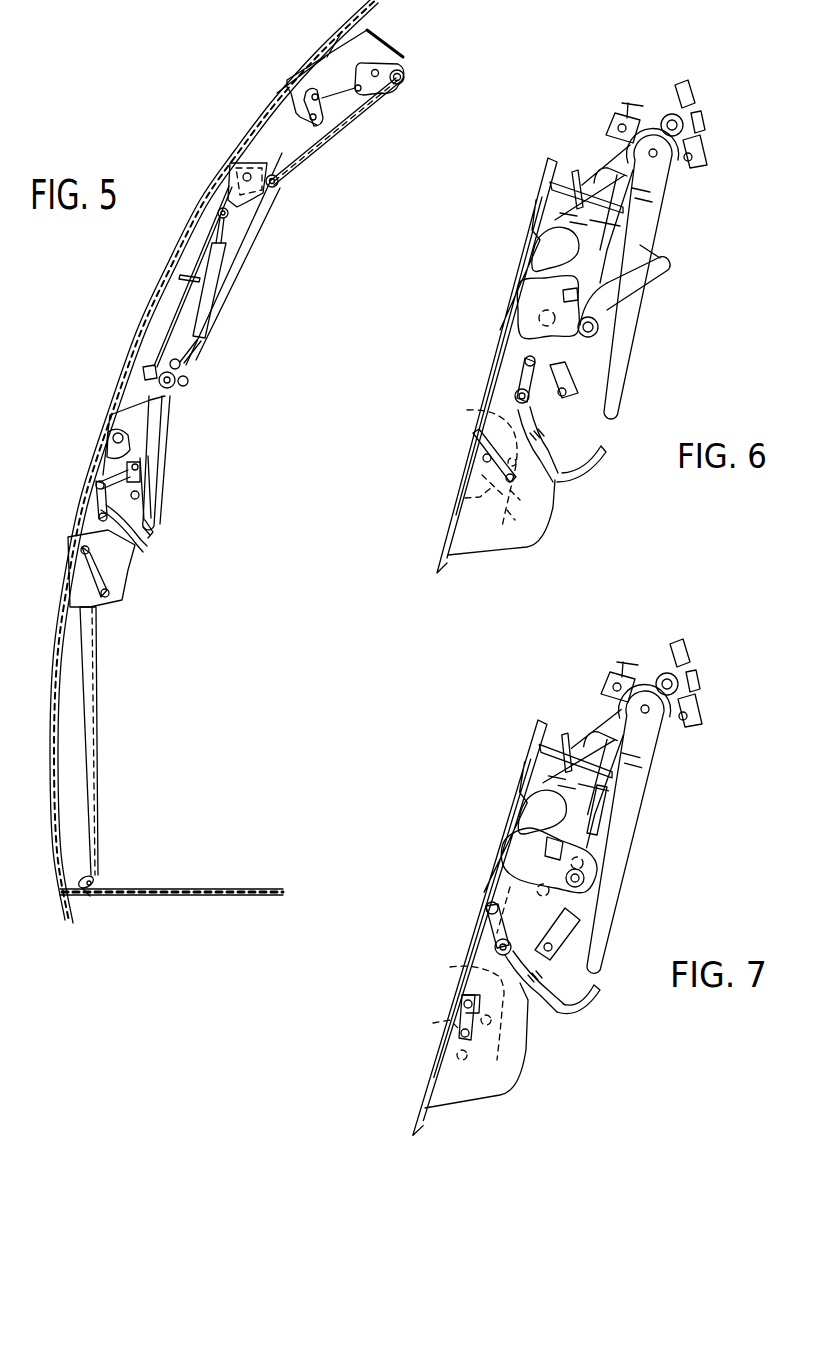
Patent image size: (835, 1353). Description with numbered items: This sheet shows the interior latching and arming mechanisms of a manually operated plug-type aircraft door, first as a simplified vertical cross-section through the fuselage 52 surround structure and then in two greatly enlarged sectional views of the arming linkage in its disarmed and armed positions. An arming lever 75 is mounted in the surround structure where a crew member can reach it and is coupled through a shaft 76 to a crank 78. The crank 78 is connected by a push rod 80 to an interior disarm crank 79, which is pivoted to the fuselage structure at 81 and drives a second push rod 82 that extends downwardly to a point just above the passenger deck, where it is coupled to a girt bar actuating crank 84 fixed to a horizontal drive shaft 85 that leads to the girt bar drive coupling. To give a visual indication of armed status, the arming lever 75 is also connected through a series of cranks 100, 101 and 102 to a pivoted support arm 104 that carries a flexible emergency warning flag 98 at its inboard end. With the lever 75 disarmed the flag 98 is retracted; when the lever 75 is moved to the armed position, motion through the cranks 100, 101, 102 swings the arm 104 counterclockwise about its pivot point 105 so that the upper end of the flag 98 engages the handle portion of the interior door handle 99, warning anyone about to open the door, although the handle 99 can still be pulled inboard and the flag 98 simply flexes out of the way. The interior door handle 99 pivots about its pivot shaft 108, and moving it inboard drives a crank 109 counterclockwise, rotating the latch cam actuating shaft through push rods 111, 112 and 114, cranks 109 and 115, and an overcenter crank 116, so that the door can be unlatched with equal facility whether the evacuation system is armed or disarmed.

In FIG. 5, the fuselage 52 is at (222, 193).
In FIG. 5, the arming lever 75 is at (147, 462).
In FIG. 6, the arming lever 75 is at (637, 290).
In FIG. 7, the arming lever 75 is at (595, 815).
In FIG. 6, the shaft 76 is at (607, 330).
In FIG. 7, the shaft 76 is at (595, 877).
In FIG. 6, the crank 78 is at (620, 267).
In FIG. 7, the crank 78 is at (600, 858).
In FIG. 6, the interior disarm crank 79 is at (465, 500).
In FIG. 7, the interior disarm crank 79 is at (433, 1023).
In FIG. 6, the push rod 80 is at (467, 410).
In FIG. 7, the push rod 80 is at (450, 968).
In FIG. 6, the pivot 81 is at (480, 457).
In FIG. 7, the pivot 81 is at (468, 1005).
In FIG. 5, the second push rod 82 is at (88, 747).
In FIG. 6, the second push rod 82 is at (502, 527).
In FIG. 7, the second push rod 82 is at (443, 1068).
In FIG. 5, the girt bar actuating crank 84 is at (95, 870).
In FIG. 5, the drive shaft 85 is at (85, 893).
In FIG. 5, the flexible emergency warning flag 98 is at (150, 537).
In FIG. 6, the flexible emergency warning flag 98 is at (590, 483).
In FIG. 7, the flexible emergency warning flag 98 is at (597, 993).
In FIG. 5, the interior door handle 99 is at (158, 443).
In FIG. 6, the interior door handle 99 is at (618, 357).
In FIG. 7, the interior door handle 99 is at (605, 905).
In FIG. 5, the crank 100 is at (105, 442).
In FIG. 6, the crank 100 is at (585, 363).
In FIG. 7, the crank 100 is at (567, 915).
In FIG. 5, the crank 101 is at (127, 470).
In FIG. 6, the crank 101 is at (515, 343).
In FIG. 7, the crank 101 is at (517, 885).
In FIG. 5, the crank 102 is at (97, 497).
In FIG. 6, the crank 102 is at (520, 373).
In FIG. 7, the crank 102 is at (488, 927).
In FIG. 5, the pivoted support arm 104 is at (118, 570).
In FIG. 6, the pivoted support arm 104 is at (553, 460).
In FIG. 7, the pivoted support arm 104 is at (560, 1013).
In FIG. 7, the pivot point 105 is at (495, 948).
In FIG. 5, the pivot shaft 108 is at (187, 373).
In FIG. 5, the crank 109 is at (183, 393).
In FIG. 5, the push rod 111 is at (228, 270).
In FIG. 6, the push rod 111 is at (700, 90).
In FIG. 7, the push rod 111 is at (672, 683).
In FIG. 5, the push rod 112 is at (323, 143).
In FIG. 5, the push rod 114 is at (357, 124).
In FIG. 5, the crank 115 is at (262, 200).
In FIG. 5, the overcenter crank 116 is at (408, 58).